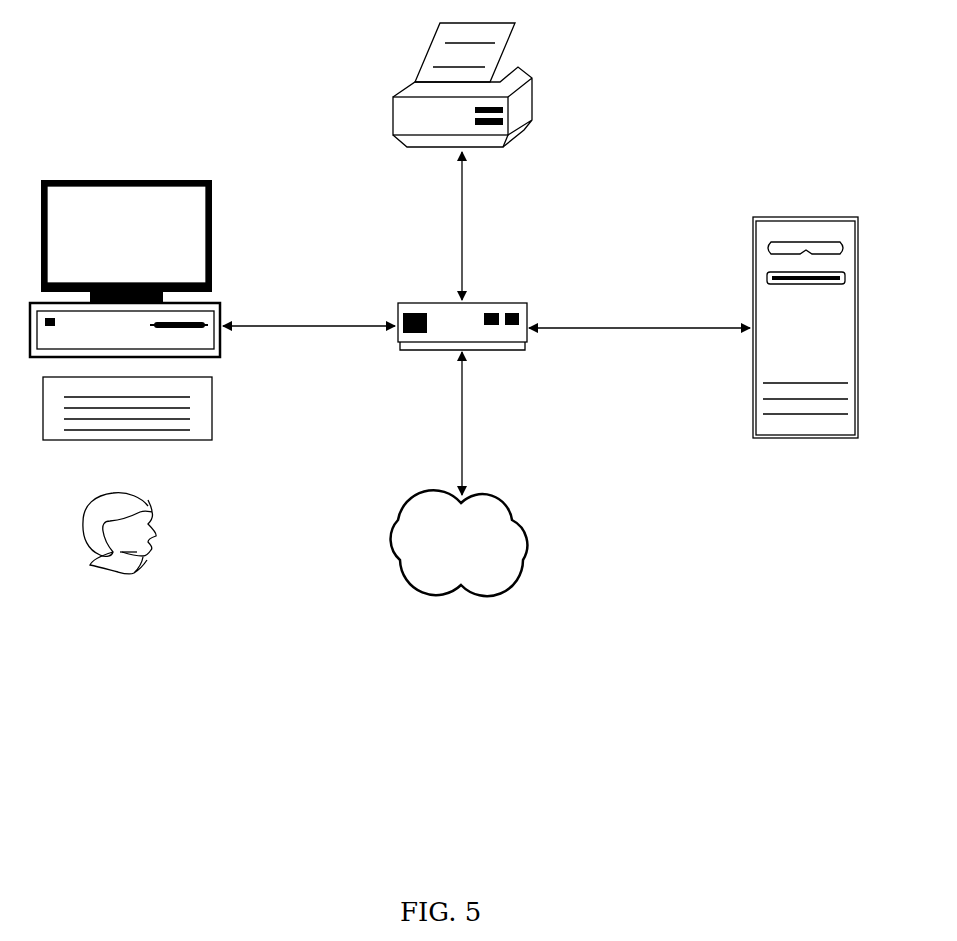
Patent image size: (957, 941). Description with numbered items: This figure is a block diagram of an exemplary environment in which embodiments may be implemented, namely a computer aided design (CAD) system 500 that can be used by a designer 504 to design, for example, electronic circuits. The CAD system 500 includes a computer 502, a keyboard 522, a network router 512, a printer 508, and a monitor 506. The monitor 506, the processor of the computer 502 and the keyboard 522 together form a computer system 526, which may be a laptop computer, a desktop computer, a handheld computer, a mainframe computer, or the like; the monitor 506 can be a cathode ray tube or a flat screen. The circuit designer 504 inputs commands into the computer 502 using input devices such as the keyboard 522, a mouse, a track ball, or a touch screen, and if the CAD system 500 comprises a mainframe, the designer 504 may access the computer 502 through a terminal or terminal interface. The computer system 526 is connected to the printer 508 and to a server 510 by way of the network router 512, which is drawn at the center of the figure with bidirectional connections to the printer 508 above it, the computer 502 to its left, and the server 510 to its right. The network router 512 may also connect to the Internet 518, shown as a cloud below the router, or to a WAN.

The CAD system 500 is at (734, 93).
The computer 502 is at (222, 305).
The designer 504 is at (147, 497).
The monitor 506 is at (209, 183).
The printer 508 is at (393, 125).
The server 510 is at (753, 422).
The network router 512 is at (495, 303).
The Internet 518 is at (497, 503).
The keyboard 522 is at (212, 405).
The computer system 526 is at (216, 231).